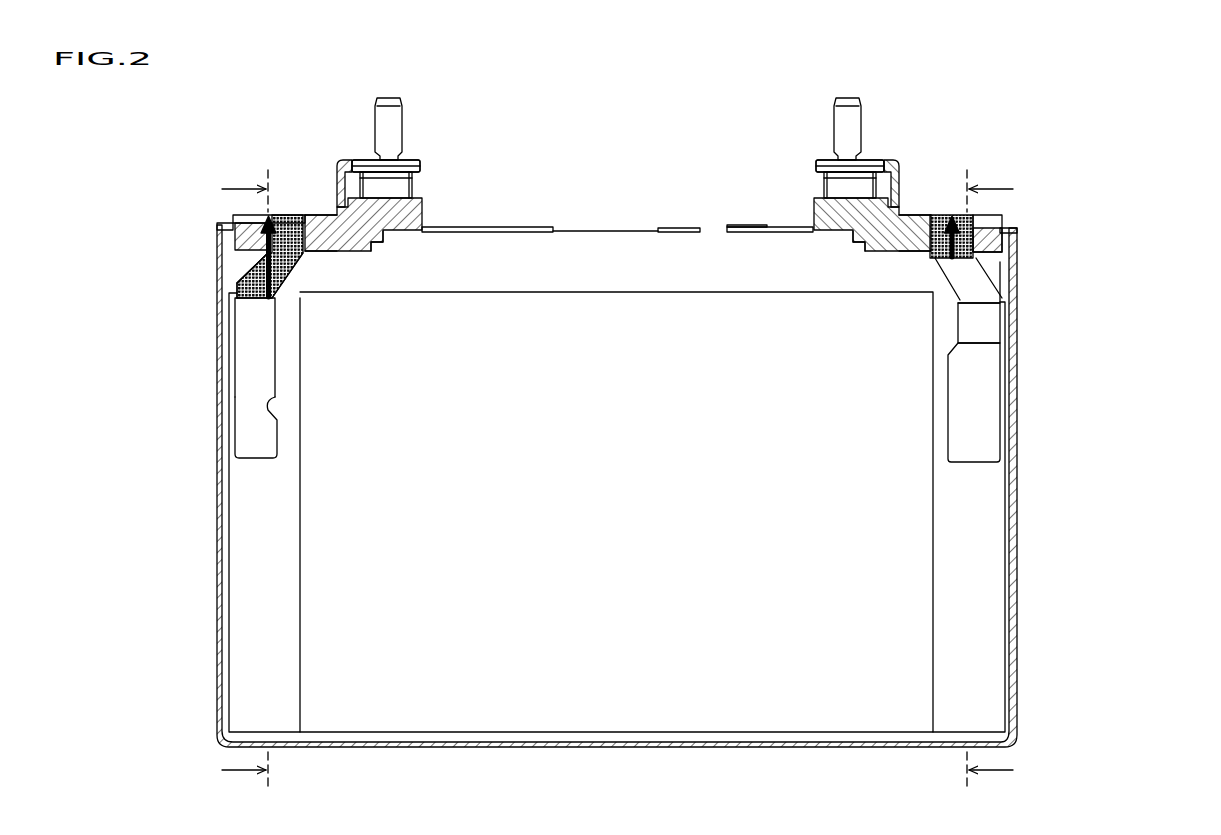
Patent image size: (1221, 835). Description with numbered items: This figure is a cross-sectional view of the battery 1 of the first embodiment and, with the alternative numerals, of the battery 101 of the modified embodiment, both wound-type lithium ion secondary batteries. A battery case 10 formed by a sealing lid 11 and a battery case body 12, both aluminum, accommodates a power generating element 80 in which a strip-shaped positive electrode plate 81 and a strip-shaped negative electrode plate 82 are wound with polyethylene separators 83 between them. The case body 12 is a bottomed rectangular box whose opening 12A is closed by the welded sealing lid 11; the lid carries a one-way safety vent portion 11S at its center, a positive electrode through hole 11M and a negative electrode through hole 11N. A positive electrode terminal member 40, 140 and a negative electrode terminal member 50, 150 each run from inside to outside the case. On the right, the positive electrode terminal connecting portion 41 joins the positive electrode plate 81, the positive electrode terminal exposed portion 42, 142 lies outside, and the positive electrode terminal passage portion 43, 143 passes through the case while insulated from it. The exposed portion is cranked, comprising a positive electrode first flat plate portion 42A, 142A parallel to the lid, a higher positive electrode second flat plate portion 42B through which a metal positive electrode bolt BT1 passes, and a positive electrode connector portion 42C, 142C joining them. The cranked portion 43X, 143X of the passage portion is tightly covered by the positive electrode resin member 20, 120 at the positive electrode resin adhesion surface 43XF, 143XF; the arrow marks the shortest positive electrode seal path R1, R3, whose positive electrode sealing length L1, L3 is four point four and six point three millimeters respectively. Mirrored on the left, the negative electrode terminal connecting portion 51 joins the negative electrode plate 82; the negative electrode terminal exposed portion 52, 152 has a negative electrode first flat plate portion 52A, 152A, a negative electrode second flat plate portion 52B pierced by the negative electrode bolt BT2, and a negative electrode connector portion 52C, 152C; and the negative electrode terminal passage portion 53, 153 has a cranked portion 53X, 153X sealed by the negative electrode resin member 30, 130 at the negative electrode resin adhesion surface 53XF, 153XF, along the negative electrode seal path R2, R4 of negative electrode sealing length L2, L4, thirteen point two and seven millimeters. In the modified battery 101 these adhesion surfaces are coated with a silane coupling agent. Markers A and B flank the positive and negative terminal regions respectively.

The battery 1 is at (668, 126).
The battery 101 is at (633, 441).
The battery case 10 is at (1057, 226).
The sealing lid 11 is at (1012, 231).
The safety vent portion 11S is at (594, 231).
The negative electrode through hole 11N is at (378, 242).
The positive electrode through hole 11M is at (858, 242).
The battery case body 12 is at (1014, 274).
The opening 12A is at (252, 240).
The positive electrode resin member 20 is at (814, 212).
The positive electrode resin member 120 is at (823, 215).
The negative electrode resin member 30 is at (418, 212).
The negative electrode resin member 130 is at (407, 215).
The positive electrode bolt BT1 is at (840, 128).
The negative electrode bolt BT2 is at (394, 129).
The positive electrode terminal member 40 is at (1129, 302).
The positive electrode terminal member 140 is at (1077, 348).
The positive electrode terminal connecting portion 41 is at (985, 378).
The positive electrode terminal exposed portion 42 is at (985, 235).
The positive electrode terminal exposed portion 142 is at (1046, 279).
The positive electrode first flat plate portion 42A is at (920, 215).
The positive electrode first flat plate portion 142A is at (958, 181).
The positive electrode second flat plate portion 42B is at (876, 162).
The positive electrode connector portion 42C is at (899, 200).
The positive electrode connector portion 142C is at (938, 149).
The positive electrode terminal passage portion 43 is at (985, 322).
The positive electrode terminal passage portion 143 is at (1046, 331).
The positive electrode resin adhesion surface 43XF is at (1045, 196).
The positive electrode resin adhesion surface 143XF is at (1045, 196).
The cranked portion 43X is at (950, 215).
The cranked portion 143X is at (1045, 196).
The negative electrode terminal member 50 is at (128, 296).
The negative electrode terminal member 150 is at (168, 355).
The negative electrode terminal connecting portion 51 is at (247, 415).
The negative electrode terminal exposed portion 52 is at (247, 263).
The negative electrode terminal exposed portion 152 is at (198, 286).
The negative electrode first flat plate portion 52A is at (318, 215).
The negative electrode first flat plate portion 152A is at (290, 181).
The negative electrode second flat plate portion 52B is at (358, 162).
The negative electrode connector portion 52C is at (341, 200).
The negative electrode connector portion 152C is at (314, 149).
The negative electrode terminal passage portion 53 is at (248, 340).
The negative electrode terminal passage portion 153 is at (201, 347).
The negative electrode resin adhesion surface 53XF is at (202, 216).
The negative electrode resin adhesion surface 153XF is at (202, 216).
The cranked portion 53X is at (296, 215).
The cranked portion 153X is at (202, 216).
The power generating element 80 is at (777, 782).
The positive electrode plate 81 is at (943, 627).
The negative electrode plate 82 is at (263, 590).
The separator 83 is at (665, 665).
The positive electrode seal path R1 is at (941, 258).
The positive electrode seal path R3 is at (913, 250).
The negative electrode seal path R2 is at (292, 262).
The negative electrode seal path R4 is at (315, 256).
The positive electrode sealing length L1 is at (955, 295).
The positive electrode sealing length L3 is at (936, 308).
The negative electrode sealing length L2 is at (300, 290).
The negative electrode sealing length L4 is at (311, 293).
The section line A is at (1001, 480).
The section line B is at (235, 480).